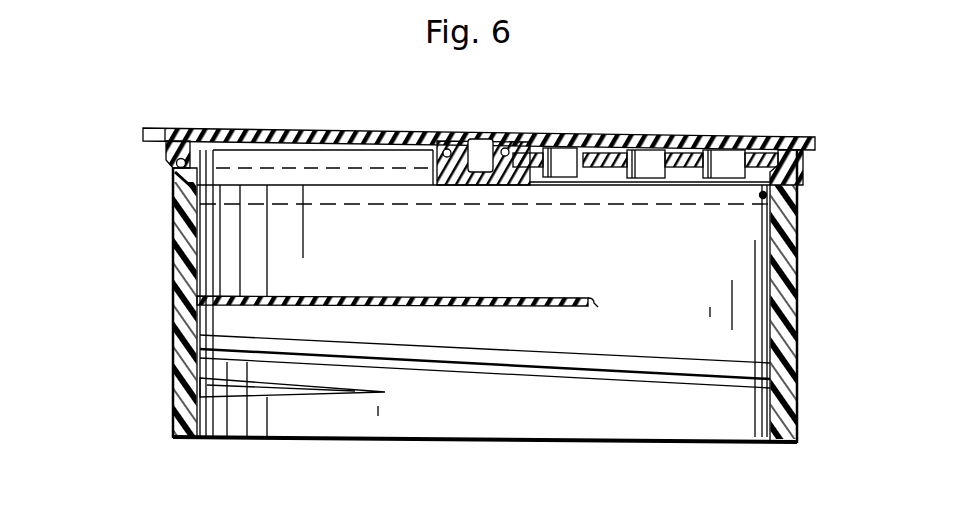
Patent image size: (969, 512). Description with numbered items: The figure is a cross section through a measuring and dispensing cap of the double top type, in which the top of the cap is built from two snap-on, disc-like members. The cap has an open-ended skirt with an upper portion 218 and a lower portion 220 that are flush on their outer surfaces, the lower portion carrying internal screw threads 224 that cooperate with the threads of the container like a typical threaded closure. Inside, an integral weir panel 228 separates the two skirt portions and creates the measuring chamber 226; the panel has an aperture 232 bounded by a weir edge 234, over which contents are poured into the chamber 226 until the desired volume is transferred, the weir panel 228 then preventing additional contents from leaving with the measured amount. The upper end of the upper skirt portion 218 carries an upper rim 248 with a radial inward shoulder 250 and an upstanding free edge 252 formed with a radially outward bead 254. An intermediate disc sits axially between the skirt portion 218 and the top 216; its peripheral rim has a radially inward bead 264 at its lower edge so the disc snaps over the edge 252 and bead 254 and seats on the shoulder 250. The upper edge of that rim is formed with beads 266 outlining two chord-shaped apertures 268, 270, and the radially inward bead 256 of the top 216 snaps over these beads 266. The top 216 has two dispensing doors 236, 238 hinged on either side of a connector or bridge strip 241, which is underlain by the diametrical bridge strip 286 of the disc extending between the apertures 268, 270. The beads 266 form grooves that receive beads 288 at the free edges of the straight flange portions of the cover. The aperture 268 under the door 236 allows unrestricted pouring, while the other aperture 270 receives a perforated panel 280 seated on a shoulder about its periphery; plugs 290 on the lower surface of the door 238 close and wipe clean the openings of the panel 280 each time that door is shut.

The top or cover 216 is at (262, 122).
The upper skirt portion 218 is at (173, 250).
The lower skirt portion 220 is at (173, 338).
The internal screw threads 224 is at (492, 366).
The measuring chamber 226 is at (222, 253).
The weir panel 228 is at (355, 297).
The aperture 232 is at (654, 316).
The weir edge 234 is at (591, 307).
The dispensing door 236 is at (343, 128).
The dispensing door 238 is at (665, 137).
The connector or bridge strip 241 is at (466, 138).
The upper rim 248 is at (762, 197).
The radial inward shoulder 250 is at (800, 212).
The upstanding free edge 252 is at (172, 176).
The radially outward bead 254 is at (770, 196).
The radially inward bead 256 is at (181, 168).
The radially inward bead 264 is at (172, 196).
The beads 266 is at (172, 140).
The chord-shaped aperture 268 is at (334, 172).
The chord-shaped aperture 270 is at (609, 180).
The panel 280 is at (602, 150).
The diametrical connector or bridge strip 286 is at (470, 225).
The beads 288 is at (505, 158).
The plugs 290 is at (651, 180).